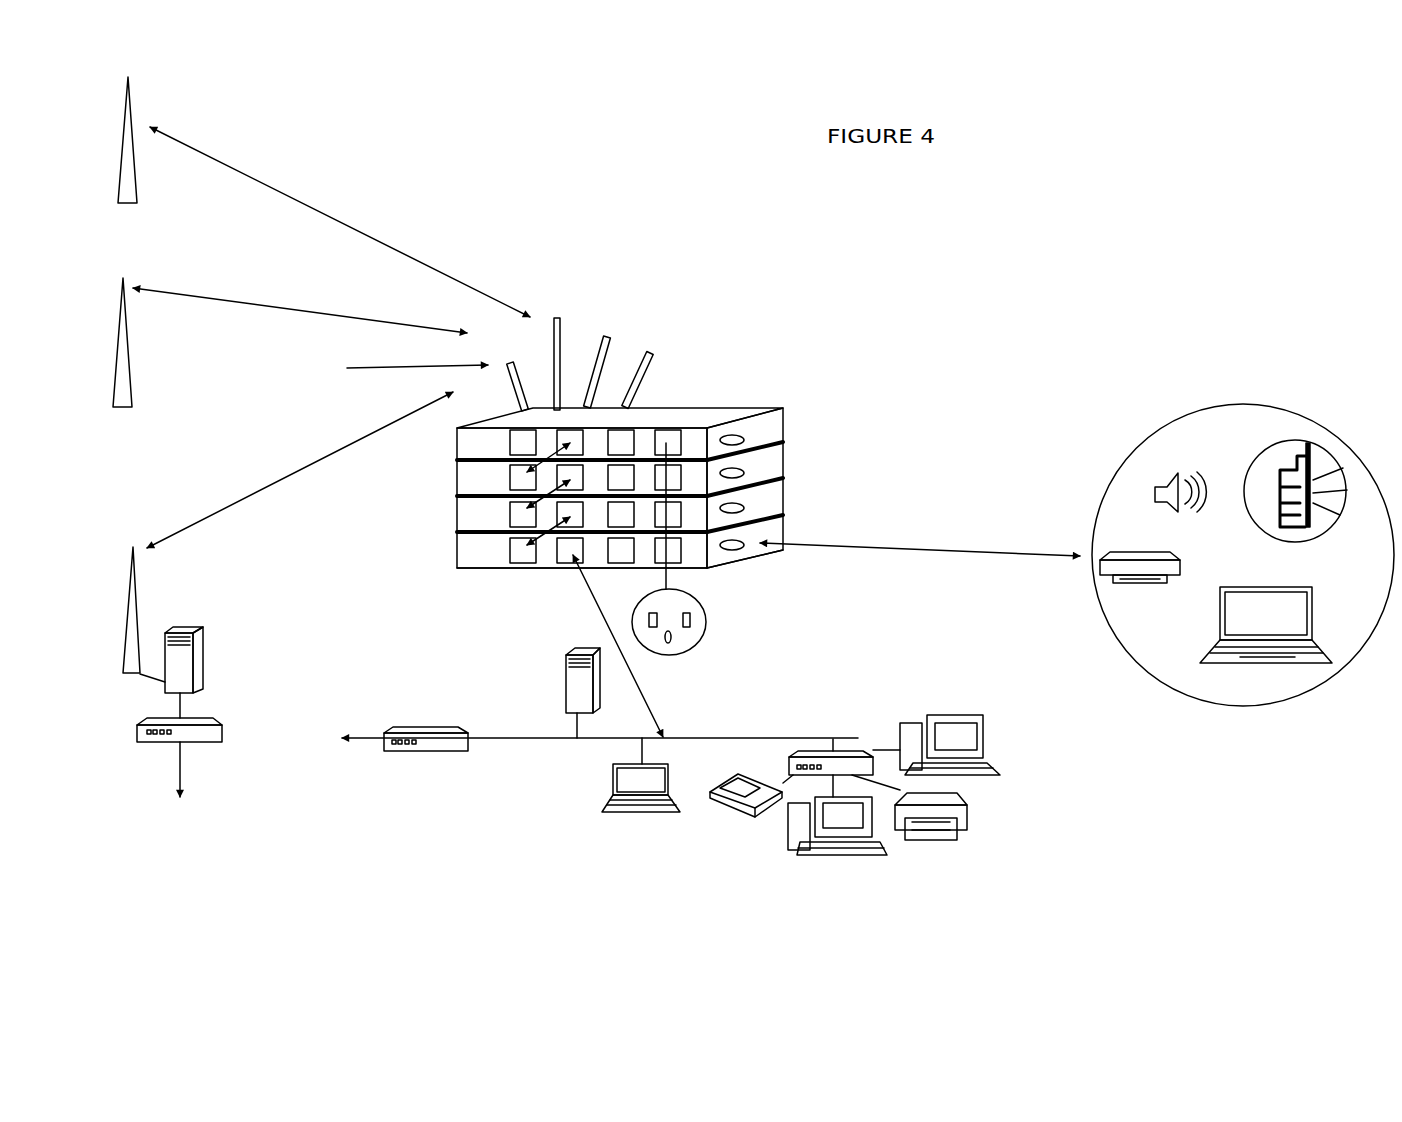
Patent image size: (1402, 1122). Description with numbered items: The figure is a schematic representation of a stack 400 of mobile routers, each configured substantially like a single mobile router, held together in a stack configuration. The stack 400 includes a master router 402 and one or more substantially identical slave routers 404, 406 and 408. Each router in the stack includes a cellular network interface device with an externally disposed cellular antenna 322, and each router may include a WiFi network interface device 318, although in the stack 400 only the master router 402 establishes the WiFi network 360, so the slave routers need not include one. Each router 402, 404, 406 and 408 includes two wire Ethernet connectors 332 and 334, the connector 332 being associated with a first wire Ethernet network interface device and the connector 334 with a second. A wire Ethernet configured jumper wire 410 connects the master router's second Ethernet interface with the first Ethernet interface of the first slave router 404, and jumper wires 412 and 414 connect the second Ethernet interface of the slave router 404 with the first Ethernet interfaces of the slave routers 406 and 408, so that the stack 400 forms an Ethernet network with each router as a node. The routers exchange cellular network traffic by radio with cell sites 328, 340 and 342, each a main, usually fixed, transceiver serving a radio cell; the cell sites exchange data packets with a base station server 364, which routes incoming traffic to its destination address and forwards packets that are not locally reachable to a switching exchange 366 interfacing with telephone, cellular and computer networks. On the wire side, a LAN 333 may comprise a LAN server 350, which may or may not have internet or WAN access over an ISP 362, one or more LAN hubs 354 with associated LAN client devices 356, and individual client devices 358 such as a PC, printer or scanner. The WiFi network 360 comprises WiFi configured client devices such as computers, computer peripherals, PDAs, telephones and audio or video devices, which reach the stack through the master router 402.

The cell site 328 is at (296, 197).
The cell site 340 is at (290, 342).
The cellular antenna 322 is at (388, 375).
The cell site 342 is at (260, 537).
The base station server 364 is at (205, 657).
The switching exchange 366 is at (138, 743).
The stack 400 is at (713, 388).
The slave router 408 is at (777, 428).
The slave router 406 is at (777, 465).
The slave router 404 is at (777, 497).
The master router 402 is at (777, 533).
The WiFi network interface device 318 is at (737, 547).
The wire Ethernet configured jumper wire 414 is at (525, 471).
The wire Ethernet configured jumper wire 412 is at (525, 508).
The wire Ethernet configured jumper wire 410 is at (525, 545).
The wire Ethernet connector 334 is at (513, 560).
The wire Ethernet connector 332 is at (567, 565).
The LAN 333 is at (592, 739).
The ISP 362 is at (427, 727).
The LAN server 350 is at (575, 690).
The individual client device 358 is at (625, 813).
The LAN hub 354 is at (848, 750).
The LAN client device 356 is at (967, 738).
The WiFi network 360 is at (1180, 443).